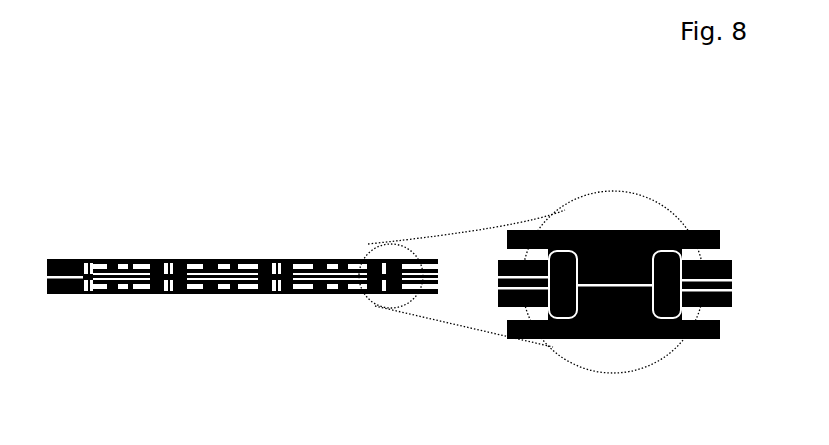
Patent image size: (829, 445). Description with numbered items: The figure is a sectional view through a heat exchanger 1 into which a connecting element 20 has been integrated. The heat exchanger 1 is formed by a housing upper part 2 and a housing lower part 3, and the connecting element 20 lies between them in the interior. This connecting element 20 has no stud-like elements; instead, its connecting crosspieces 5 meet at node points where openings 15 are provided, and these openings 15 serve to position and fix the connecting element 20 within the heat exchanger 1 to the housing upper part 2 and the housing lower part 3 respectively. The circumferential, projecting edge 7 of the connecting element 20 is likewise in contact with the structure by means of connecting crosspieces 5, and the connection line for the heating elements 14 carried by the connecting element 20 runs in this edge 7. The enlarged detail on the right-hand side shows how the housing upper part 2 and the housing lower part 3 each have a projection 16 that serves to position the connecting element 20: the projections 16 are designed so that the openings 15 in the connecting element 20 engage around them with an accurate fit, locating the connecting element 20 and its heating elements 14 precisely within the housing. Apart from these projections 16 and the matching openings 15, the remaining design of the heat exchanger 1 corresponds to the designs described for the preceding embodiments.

The heat exchanger 1 is at (90, 243).
The housing upper part 2 is at (143, 259).
The housing lower part 3 is at (108, 296).
The connecting crosspieces 5 is at (198, 259).
The edge 7 is at (51, 296).
The heating elements 14 is at (257, 259).
The openings 15 is at (275, 296).
The projection 16 is at (634, 230).
The connecting element 20 is at (318, 296).